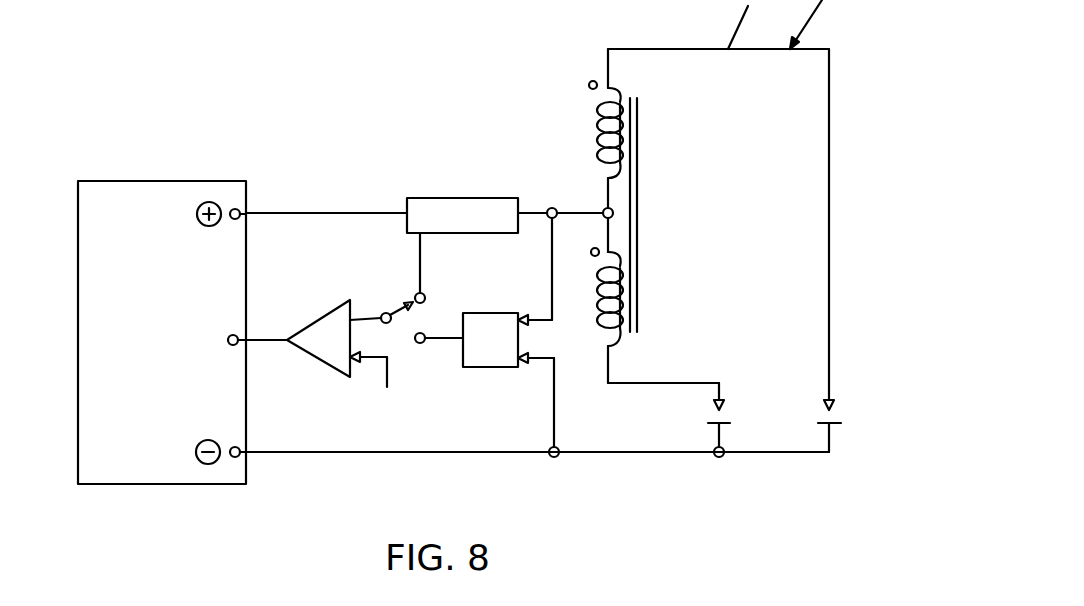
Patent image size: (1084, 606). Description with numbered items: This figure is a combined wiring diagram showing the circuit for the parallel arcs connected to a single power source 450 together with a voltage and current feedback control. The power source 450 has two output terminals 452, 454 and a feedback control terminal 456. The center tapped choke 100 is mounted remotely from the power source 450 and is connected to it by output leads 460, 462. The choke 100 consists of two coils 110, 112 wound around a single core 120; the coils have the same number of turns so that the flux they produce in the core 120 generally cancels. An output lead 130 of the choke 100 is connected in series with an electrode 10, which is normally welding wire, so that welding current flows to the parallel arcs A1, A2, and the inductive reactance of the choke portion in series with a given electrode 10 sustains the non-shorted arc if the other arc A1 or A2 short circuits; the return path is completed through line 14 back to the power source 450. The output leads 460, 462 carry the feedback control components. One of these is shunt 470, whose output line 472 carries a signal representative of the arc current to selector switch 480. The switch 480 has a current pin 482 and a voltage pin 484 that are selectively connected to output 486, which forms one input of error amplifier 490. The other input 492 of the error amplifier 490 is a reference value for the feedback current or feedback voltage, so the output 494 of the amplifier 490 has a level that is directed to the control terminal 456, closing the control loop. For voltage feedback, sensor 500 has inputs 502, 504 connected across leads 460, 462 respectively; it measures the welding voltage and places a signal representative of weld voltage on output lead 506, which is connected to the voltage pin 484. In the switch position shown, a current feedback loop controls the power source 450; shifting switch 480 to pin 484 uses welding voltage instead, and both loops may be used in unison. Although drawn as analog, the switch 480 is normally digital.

The power source 450 is at (178, 178).
The output terminal 452 is at (239, 209).
The output terminal 454 is at (233, 457).
The feedback control terminal 456 is at (228, 338).
The output lead 460 is at (293, 213).
The output lead 462 is at (300, 452).
The shunt 470 is at (433, 197).
The output line 472 is at (417, 263).
The selector switch 480 is at (440, 293).
The current pin 482 is at (413, 295).
The voltage pin 484 is at (425, 335).
The output 486 is at (353, 323).
The error amplifier 490 is at (289, 337).
The input 492 is at (383, 385).
The output 494 is at (263, 340).
The sensor 500 is at (513, 367).
The input 502 is at (556, 242).
The input 504 is at (555, 408).
The output lead 506 is at (437, 341).
The center tapped choke 100 is at (648, 134).
The coil 110 is at (595, 117).
The coil 112 is at (600, 302).
The core 120 is at (639, 188).
The output lead 130 is at (681, 382).
The electrode 10 is at (726, 383).
The return line 14 is at (660, 453).
The arc A1 is at (725, 414).
The arc A2 is at (840, 413).